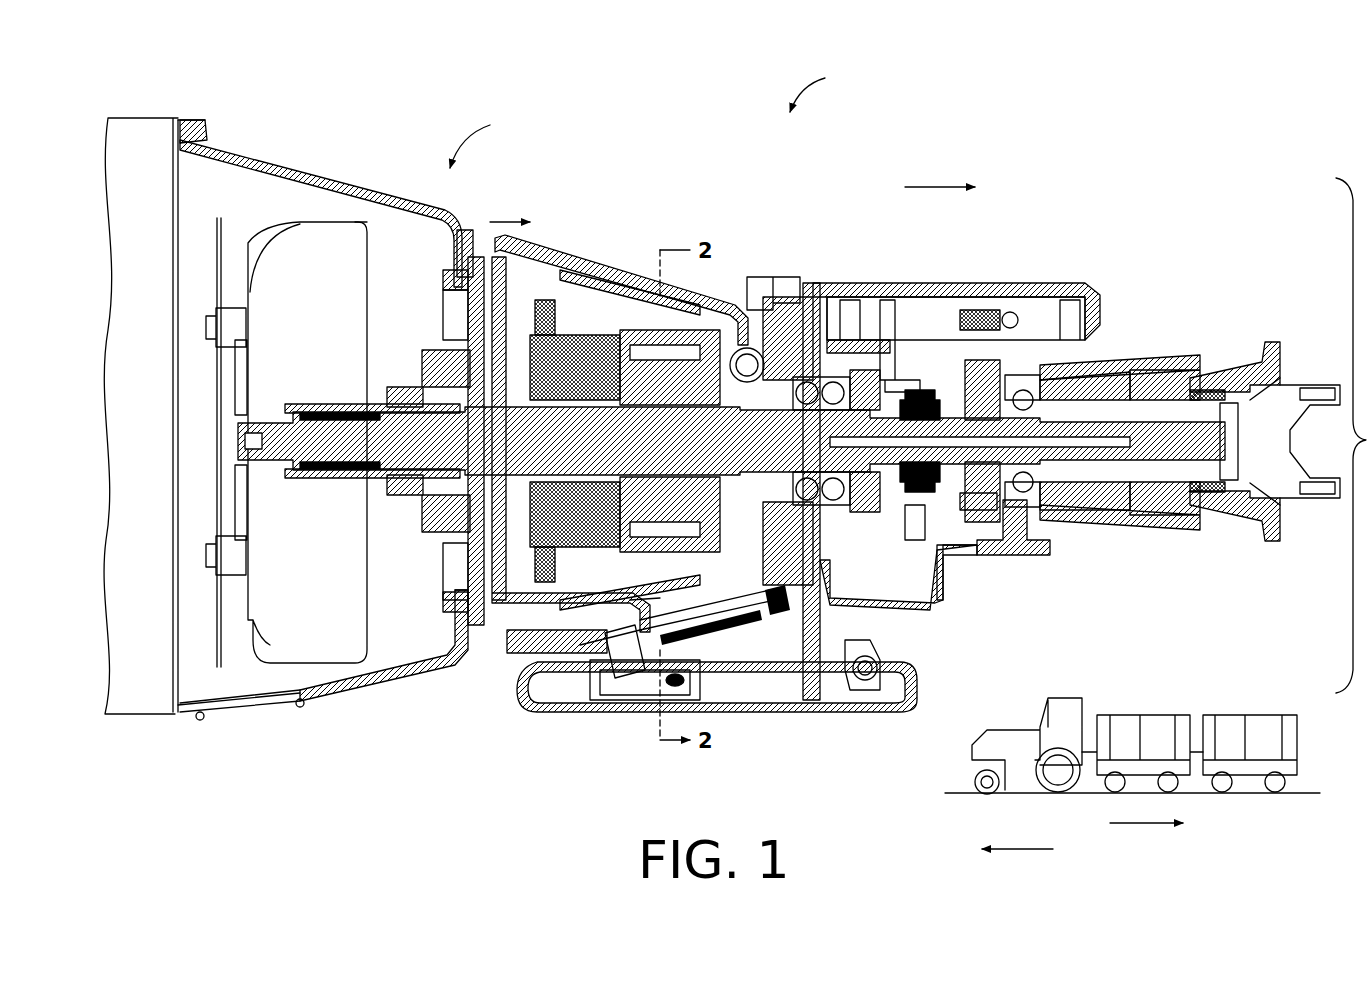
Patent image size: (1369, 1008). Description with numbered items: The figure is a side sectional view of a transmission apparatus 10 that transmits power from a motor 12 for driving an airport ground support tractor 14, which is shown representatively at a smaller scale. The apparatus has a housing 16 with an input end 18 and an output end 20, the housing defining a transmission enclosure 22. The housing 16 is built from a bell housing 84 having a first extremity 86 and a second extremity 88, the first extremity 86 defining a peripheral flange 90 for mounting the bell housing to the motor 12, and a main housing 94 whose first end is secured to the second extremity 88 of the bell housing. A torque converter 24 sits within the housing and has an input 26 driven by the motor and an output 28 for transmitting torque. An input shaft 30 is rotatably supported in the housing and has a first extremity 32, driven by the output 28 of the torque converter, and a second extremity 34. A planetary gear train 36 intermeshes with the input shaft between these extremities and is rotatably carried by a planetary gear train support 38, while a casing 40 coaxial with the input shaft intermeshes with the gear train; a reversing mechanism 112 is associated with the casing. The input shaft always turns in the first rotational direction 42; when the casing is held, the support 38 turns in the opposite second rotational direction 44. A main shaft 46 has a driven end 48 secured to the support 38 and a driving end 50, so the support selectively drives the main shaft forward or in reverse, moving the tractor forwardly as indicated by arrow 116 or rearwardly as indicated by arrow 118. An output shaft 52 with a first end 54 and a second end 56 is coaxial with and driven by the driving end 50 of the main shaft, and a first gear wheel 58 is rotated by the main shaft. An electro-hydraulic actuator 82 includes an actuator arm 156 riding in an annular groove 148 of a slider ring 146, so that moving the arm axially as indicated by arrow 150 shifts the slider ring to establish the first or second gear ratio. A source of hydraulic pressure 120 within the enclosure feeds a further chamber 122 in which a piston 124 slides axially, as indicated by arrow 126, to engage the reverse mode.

The transmission apparatus 10 is at (823, 87).
The motor 12 is at (150, 712).
The airport ground support tractor 14 is at (1012, 733).
The housing 16 is at (482, 137).
The input end 18 is at (232, 135).
The output end 20 is at (1160, 370).
The transmission enclosure 22 is at (412, 315).
The torque converter 24 is at (275, 650).
The input 26 is at (248, 293).
The output 28 is at (357, 218).
The input shaft 30 is at (368, 600).
The first extremity 32 is at (290, 478).
The second extremity 34 is at (720, 305).
The planetary gear train 36 is at (640, 300).
The planetary gear train support 38 is at (720, 560).
The casing 40 is at (625, 640).
The first rotational direction 42 is at (297, 482).
The second rotational direction 44 is at (605, 300).
The main shaft 46 is at (855, 300).
The driven end 48 is at (780, 600).
The driving end 50 is at (935, 335).
The output shaft 52 is at (1095, 360).
The first end 54 is at (945, 572).
The second end 56 is at (1205, 400).
The first gear wheel 58 is at (838, 560).
The electro-hydraulic actuator 82 is at (838, 268).
The bell housing 84 is at (220, 718).
The first extremity 86 is at (190, 140).
The second extremity 88 is at (500, 255).
The peripheral flange 90 is at (195, 122).
The main housing 94 is at (505, 662).
The reversing mechanism 112 is at (562, 280).
The arrow (forward direction) 116 is at (1035, 852).
The arrow (rearward direction) 118 is at (1135, 824).
The source of hydraulic pressure 120 is at (600, 685).
The further chamber 122 is at (462, 598).
The piston 124 is at (447, 277).
The arrow (piston movement) 126 is at (515, 220).
The slider ring 146 is at (912, 510).
The annular groove 148 is at (985, 300).
The arrow (actuator arm movement) 150 is at (940, 186).
The actuator arm 156 is at (895, 320).